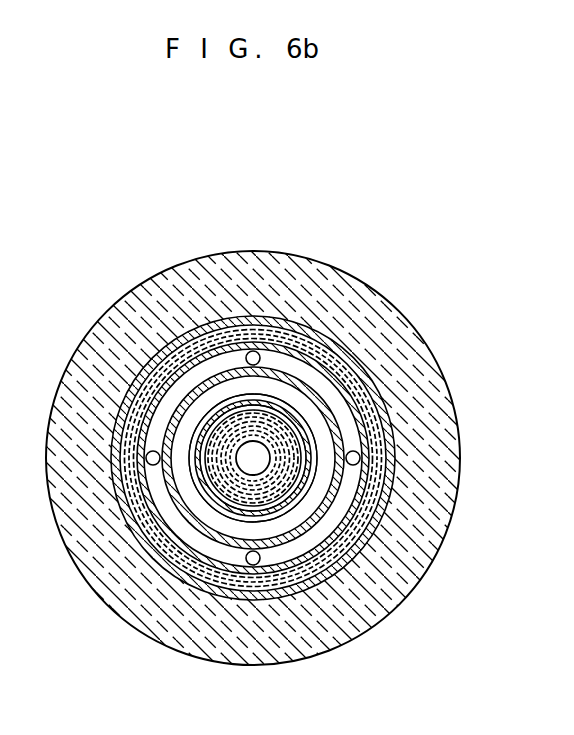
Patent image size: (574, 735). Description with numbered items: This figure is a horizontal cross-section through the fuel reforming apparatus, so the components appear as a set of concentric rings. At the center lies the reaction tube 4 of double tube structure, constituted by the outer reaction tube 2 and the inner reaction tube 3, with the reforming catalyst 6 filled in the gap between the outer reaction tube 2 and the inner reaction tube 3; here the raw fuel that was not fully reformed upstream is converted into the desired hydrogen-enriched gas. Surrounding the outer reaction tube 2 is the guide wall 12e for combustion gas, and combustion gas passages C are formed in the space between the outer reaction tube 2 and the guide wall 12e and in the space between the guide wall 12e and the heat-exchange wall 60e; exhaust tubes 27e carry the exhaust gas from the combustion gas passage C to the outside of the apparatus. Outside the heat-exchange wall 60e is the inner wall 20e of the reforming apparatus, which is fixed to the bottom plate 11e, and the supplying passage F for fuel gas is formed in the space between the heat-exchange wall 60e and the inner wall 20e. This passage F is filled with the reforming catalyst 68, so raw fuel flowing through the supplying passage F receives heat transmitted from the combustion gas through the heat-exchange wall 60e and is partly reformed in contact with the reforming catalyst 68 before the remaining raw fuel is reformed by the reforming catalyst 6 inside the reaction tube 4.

The reforming catalyst 6 is at (139, 287).
The supplying passage for fuel gas F is at (400, 573).
The combustion gas passage C is at (217, 417).
The reforming catalyst 68 is at (193, 422).
The outer reaction tube 2 is at (292, 418).
The inner reaction tube 3 is at (307, 411).
The reaction tube 4 is at (341, 409).
The bottom plate 11e is at (347, 425).
The exhaust tube 27e is at (383, 448).
The guide wall for combustion gas 12e is at (207, 477).
The heat-exchange wall 60e is at (162, 522).
The inner wall of the reforming apparatus 20e is at (155, 548).